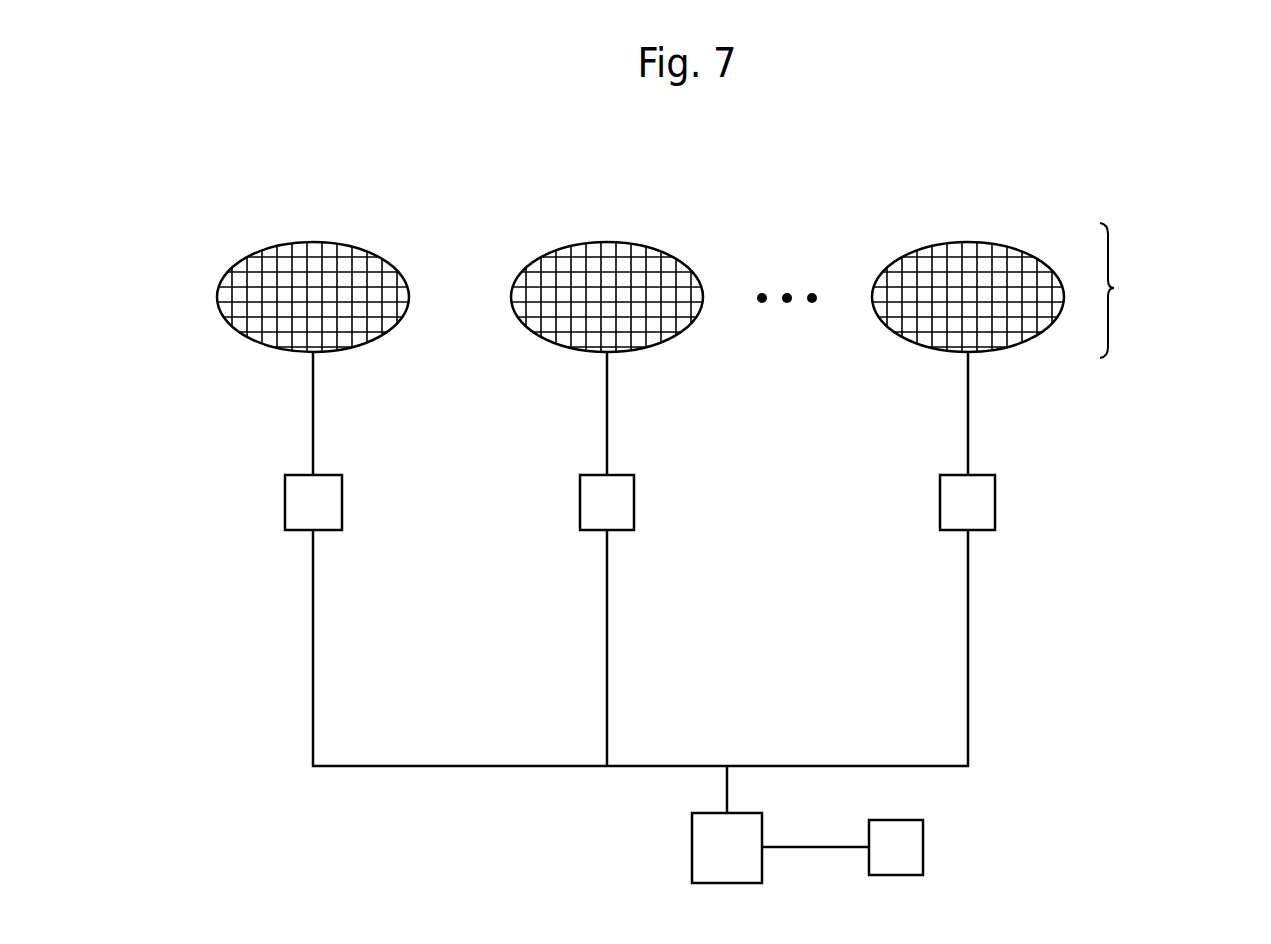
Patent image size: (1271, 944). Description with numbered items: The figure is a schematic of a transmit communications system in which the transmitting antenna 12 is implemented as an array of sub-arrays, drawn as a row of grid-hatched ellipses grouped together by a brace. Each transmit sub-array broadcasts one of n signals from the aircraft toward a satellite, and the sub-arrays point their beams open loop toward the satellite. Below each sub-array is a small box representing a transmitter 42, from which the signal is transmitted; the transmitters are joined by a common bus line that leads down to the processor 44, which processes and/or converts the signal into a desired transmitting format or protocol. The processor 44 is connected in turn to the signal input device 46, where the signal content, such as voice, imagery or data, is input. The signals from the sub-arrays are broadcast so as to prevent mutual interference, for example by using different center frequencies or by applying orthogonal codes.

The transmitting antenna 12 is at (1128, 287).
The transmitter 42 is at (285, 500).
The processor 44 is at (692, 844).
The signal input device 46 is at (923, 848).